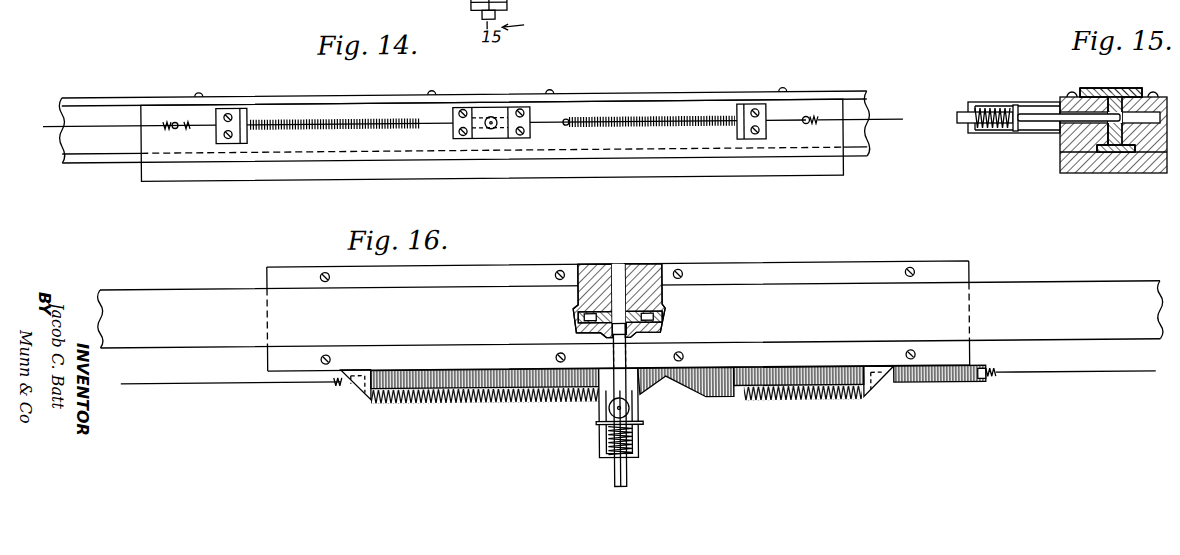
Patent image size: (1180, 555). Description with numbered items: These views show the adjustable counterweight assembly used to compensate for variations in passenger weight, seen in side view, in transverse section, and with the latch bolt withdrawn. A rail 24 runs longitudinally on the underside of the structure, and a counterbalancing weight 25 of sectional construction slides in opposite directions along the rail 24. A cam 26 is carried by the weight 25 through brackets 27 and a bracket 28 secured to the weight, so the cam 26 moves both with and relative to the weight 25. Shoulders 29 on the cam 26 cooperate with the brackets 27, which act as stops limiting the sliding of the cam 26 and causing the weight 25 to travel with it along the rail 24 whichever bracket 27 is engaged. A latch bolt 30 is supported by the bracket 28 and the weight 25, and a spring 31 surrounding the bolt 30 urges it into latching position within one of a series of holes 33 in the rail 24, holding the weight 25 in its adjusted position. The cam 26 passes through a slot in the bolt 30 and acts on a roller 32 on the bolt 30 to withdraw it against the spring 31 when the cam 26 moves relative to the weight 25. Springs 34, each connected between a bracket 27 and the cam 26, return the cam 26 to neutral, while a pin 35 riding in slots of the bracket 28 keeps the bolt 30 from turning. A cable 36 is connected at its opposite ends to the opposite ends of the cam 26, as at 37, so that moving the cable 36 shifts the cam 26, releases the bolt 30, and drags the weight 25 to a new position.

In FIG. 14, the rail 24 is at (857, 163).
In FIG. 15, the rail 24 is at (1120, 83).
In FIG. 16, the rail 24 is at (1027, 298).
In FIG. 14, the counterbalancing weight 25 is at (628, 182).
In FIG. 15, the counterbalancing weight 25 is at (1107, 174).
In FIG. 16, the counterbalancing weight 25 is at (958, 373).
In FIG. 14, the cam 26 is at (548, 128).
In FIG. 15, the cam 26 is at (1038, 115).
In FIG. 16, the cam 26 is at (725, 403).
In FIG. 14, the bracket 27 is at (247, 110).
In FIG. 16, the bracket 27 is at (352, 389).
In FIG. 14, the bracket 28 is at (507, 111).
In FIG. 15, the bracket 28 is at (1033, 135).
In FIG. 16, the bracket 28 is at (637, 444).
In FIG. 16, the shoulder 29 is at (456, 405).
In FIG. 14, the latch bolt 30 is at (490, 119).
In FIG. 15, the latch bolt 30 is at (962, 112).
In FIG. 16, the latch bolt 30 is at (625, 477).
In FIG. 15, the spring 31 is at (1000, 133).
In FIG. 16, the spring 31 is at (606, 449).
In FIG. 16, the roller 32 is at (632, 412).
In FIG. 16, the holes 33 is at (578, 321).
In FIG. 14, the spring 34 is at (305, 121).
In FIG. 16, the spring 34 is at (527, 405).
In FIG. 15, the pin 35 is at (1016, 105).
In FIG. 16, the pin 35 is at (595, 428).
In FIG. 14, the cable 36 is at (882, 125).
In FIG. 14, the cable connection 37 is at (807, 130).